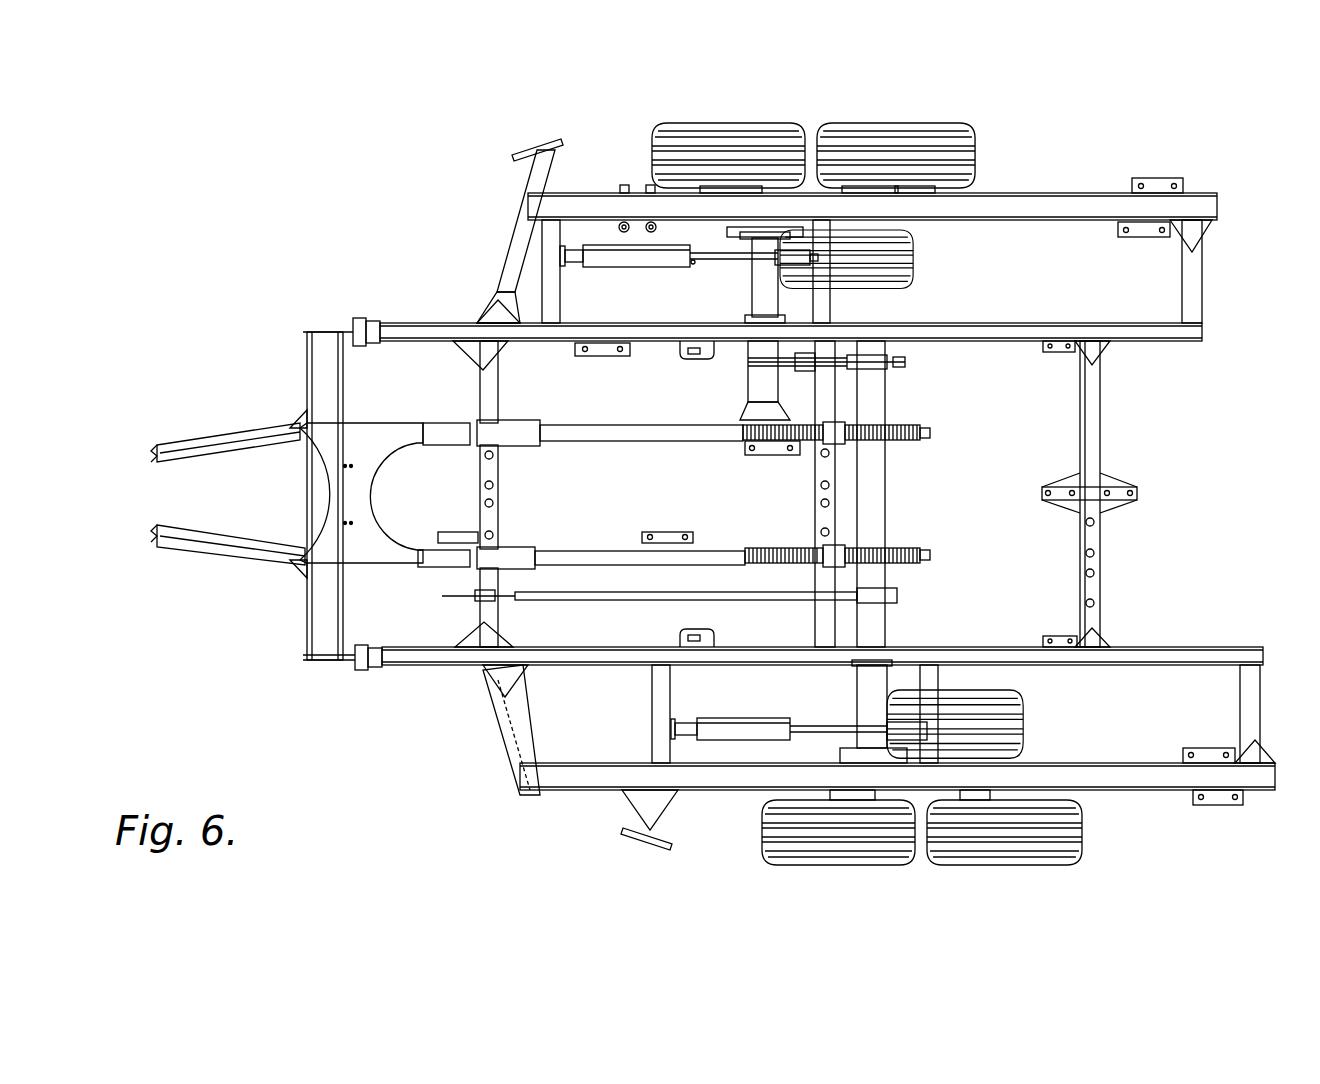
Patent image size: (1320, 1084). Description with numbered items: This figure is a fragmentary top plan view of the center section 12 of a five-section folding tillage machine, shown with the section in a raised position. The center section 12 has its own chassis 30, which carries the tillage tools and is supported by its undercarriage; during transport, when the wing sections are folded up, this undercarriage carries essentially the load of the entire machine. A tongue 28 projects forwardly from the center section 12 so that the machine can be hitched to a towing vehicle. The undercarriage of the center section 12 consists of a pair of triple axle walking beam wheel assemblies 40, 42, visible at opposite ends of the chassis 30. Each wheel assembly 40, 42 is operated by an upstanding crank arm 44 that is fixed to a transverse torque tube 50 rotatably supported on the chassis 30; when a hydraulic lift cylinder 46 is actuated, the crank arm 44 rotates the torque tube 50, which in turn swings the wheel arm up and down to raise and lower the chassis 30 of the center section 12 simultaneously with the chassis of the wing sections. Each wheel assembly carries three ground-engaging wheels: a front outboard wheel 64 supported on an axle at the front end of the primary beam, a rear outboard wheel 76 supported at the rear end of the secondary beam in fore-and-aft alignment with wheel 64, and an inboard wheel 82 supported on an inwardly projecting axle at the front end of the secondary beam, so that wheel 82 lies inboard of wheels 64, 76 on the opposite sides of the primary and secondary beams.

The center section 12 is at (1052, 178).
The tongue 28 is at (213, 550).
The chassis 30 is at (1152, 783).
The wheel assembly 40 is at (929, 864).
The wheel assembly 42 is at (815, 118).
The crank arm 44 is at (808, 258).
The lift cylinder 46 is at (620, 258).
The torque tube 50 is at (875, 505).
The front outboard ground-engaging wheel 64 is at (793, 852).
The outboard ground-engaging wheel 76 is at (1062, 852).
The inboard ground-engaging wheel 82 is at (1017, 722).